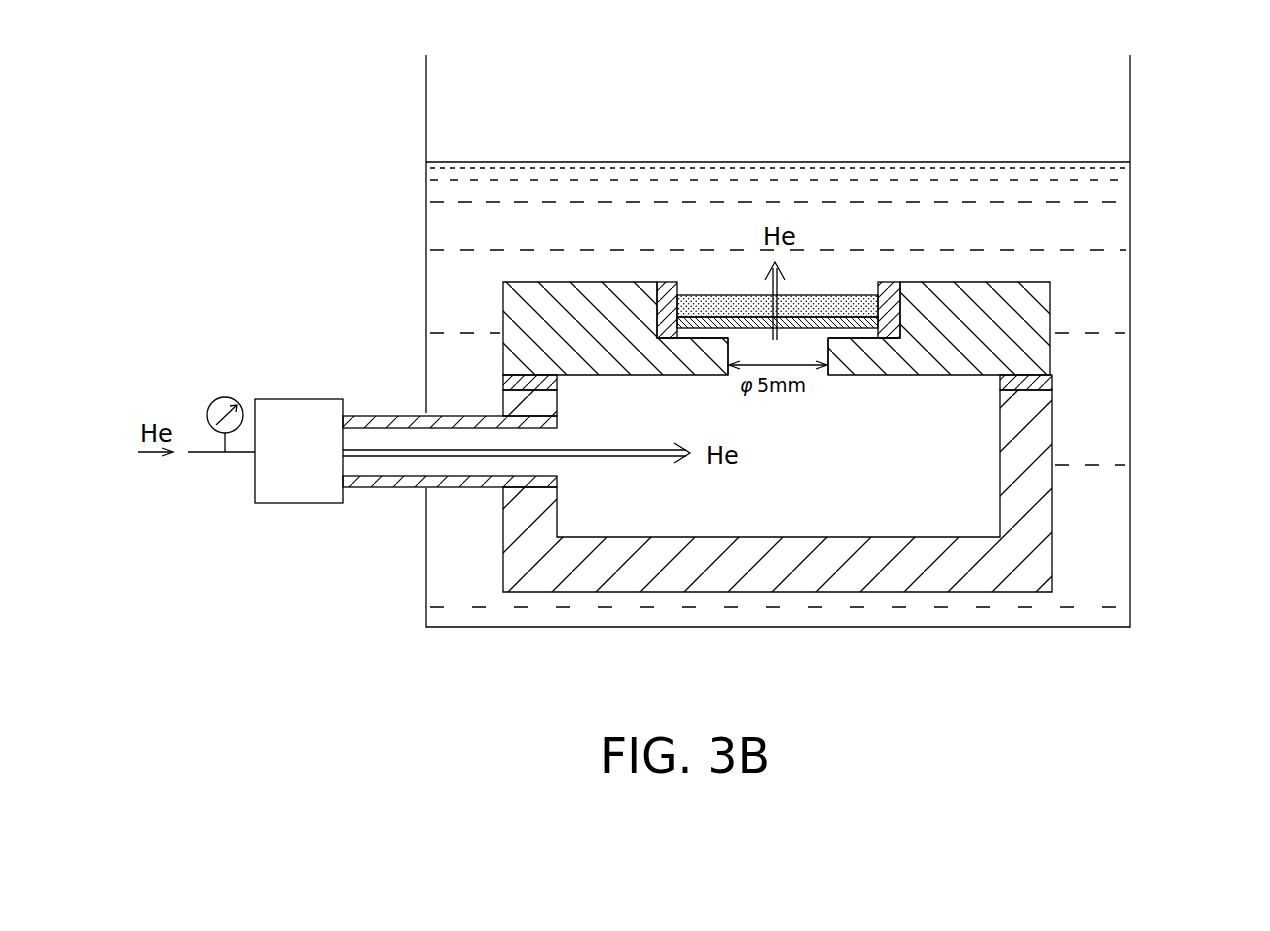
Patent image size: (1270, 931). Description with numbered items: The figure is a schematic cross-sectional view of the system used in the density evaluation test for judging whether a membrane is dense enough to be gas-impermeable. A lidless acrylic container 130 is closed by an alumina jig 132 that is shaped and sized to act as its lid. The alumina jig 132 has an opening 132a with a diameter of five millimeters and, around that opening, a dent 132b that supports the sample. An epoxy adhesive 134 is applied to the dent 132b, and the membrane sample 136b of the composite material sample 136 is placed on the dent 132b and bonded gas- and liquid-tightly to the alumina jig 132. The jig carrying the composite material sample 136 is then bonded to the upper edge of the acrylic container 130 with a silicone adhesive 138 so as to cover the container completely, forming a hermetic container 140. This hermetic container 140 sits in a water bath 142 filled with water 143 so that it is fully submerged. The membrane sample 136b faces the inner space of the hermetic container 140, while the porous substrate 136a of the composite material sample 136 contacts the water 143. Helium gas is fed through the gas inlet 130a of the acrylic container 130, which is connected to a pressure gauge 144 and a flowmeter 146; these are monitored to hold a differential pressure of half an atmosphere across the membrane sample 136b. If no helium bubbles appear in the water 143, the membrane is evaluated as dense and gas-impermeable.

The acrylic container 130 is at (916, 577).
The gas inlet 130a is at (385, 488).
The alumina jig 132 is at (1050, 312).
The opening 132a is at (830, 352).
The dent 132b is at (902, 298).
The epoxy adhesive 134 is at (893, 282).
The composite material sample 136 is at (741, 186).
The porous substrate 136a is at (720, 295).
The membrane sample 136b is at (666, 318).
The silicone adhesive 138 is at (1052, 387).
The hermetic container 140 is at (1057, 535).
The water bath 142 is at (1131, 133).
The water 143 is at (450, 193).
The pressure gauge 144 is at (221, 397).
The flowmeter 146 is at (302, 415).